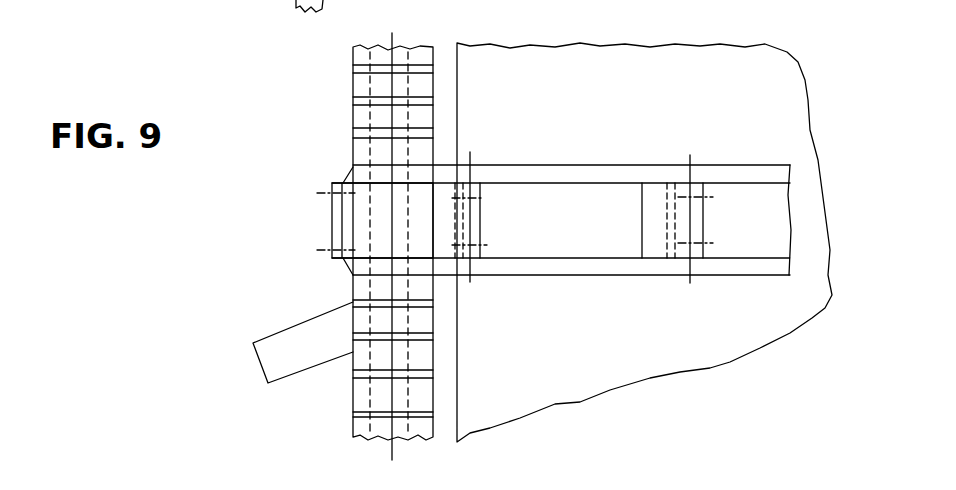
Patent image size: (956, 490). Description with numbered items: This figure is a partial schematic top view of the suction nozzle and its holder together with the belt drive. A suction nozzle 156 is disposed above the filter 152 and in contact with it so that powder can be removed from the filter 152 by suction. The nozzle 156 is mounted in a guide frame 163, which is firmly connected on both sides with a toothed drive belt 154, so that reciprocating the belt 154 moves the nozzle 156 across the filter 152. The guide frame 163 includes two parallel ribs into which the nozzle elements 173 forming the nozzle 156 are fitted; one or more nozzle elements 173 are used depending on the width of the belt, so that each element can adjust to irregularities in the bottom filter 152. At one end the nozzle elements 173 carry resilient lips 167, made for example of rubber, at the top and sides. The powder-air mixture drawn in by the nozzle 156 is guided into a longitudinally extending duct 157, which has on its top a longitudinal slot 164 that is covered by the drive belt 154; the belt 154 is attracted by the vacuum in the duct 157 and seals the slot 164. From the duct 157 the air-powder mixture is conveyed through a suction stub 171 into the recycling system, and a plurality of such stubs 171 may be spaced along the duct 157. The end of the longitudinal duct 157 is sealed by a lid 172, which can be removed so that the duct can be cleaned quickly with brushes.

The filter 152 is at (498, 101).
The drive belt 154 is at (360, 89).
The suction nozzle 156 is at (533, 247).
The longitudinally extending duct 157 is at (340, 125).
The guide frame 163 is at (761, 173).
The slot 164 is at (398, 56).
The resilient lip 167 is at (473, 212).
The suction stub 171 is at (291, 336).
The lid 172 is at (333, 232).
The nozzle element 173 is at (593, 245).